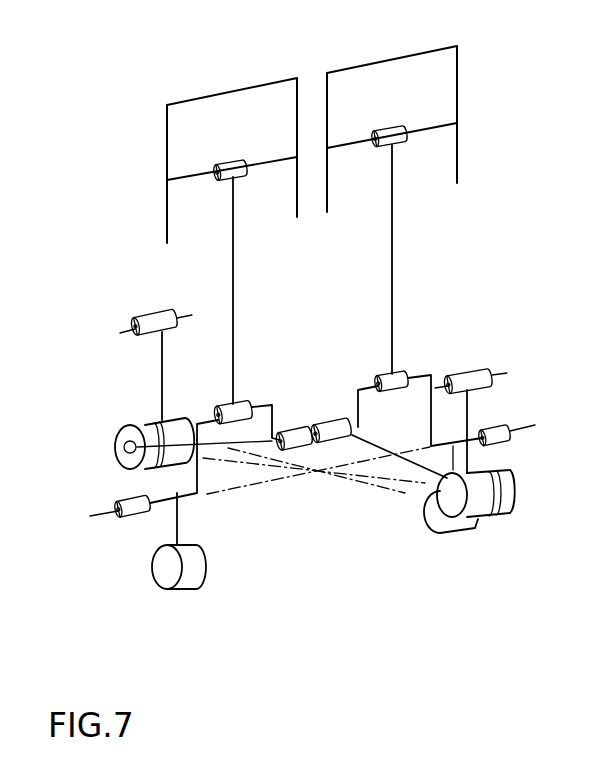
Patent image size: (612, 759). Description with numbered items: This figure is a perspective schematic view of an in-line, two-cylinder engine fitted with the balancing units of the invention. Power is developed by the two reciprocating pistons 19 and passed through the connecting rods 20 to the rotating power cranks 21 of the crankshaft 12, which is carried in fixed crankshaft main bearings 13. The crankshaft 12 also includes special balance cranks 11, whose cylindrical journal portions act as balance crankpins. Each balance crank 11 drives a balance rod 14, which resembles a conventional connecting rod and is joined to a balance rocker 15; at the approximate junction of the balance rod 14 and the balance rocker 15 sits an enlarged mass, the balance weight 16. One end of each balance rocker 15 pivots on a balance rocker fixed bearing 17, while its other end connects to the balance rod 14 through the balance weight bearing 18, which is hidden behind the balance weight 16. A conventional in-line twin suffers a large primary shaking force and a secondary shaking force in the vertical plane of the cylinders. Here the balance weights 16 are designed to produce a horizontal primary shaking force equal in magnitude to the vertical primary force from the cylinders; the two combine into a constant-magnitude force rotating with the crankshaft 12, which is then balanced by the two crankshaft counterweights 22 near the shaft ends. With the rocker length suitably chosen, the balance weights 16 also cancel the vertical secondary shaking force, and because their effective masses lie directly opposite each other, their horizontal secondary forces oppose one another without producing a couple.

The balance crank 11 is at (352, 425).
The crankshaft 12 is at (192, 498).
The crankshaft main bearing 13 is at (128, 518).
The balance rod 14 is at (378, 447).
The balance rocker 15 is at (162, 358).
The balance weight 16 is at (148, 421).
The balance rocker fixed bearing 17 is at (152, 314).
The balance weight bearing 18 is at (115, 448).
The piston 19 is at (167, 220).
The connecting rod 20 is at (234, 270).
The power crank 21 is at (262, 403).
The crankshaft counterweight 22 is at (180, 590).